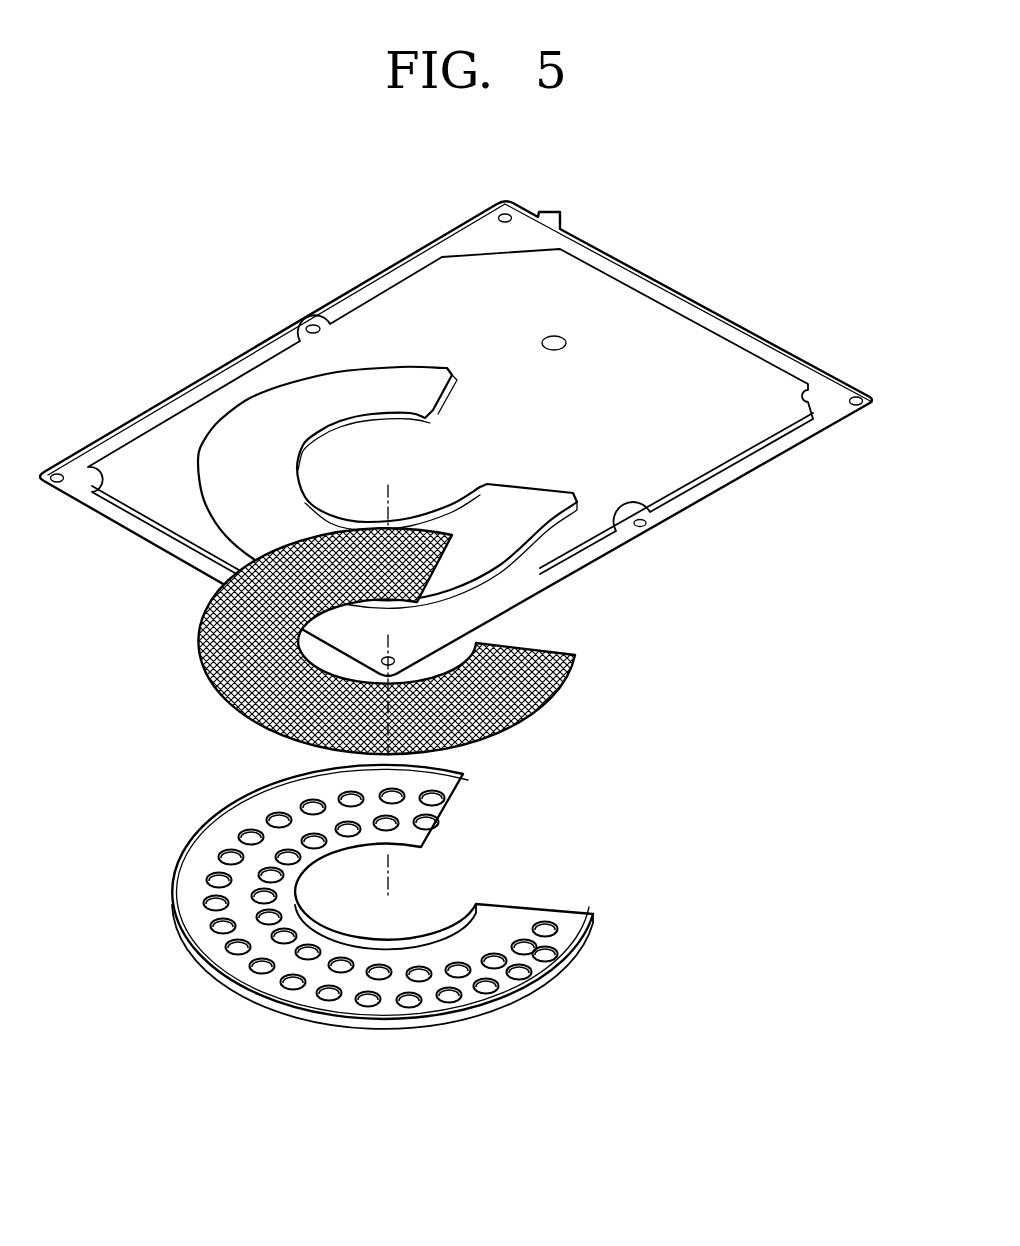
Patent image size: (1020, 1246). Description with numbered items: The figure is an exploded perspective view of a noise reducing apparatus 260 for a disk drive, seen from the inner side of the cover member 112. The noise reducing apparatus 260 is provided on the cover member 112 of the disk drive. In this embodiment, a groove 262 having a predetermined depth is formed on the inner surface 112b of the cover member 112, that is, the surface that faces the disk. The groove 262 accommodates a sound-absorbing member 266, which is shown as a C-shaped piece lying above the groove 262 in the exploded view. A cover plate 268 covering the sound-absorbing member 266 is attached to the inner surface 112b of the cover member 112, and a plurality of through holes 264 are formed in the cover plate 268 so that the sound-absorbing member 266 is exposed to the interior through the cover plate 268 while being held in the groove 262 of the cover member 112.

The cover member 112 is at (456, 438).
The inner surface 112b is at (775, 418).
The noise reducing apparatus 260 is at (477, 698).
The groove 262 is at (541, 510).
The through holes 264 is at (438, 897).
The sound-absorbing member 266 is at (573, 680).
The cover plate 268 is at (570, 910).